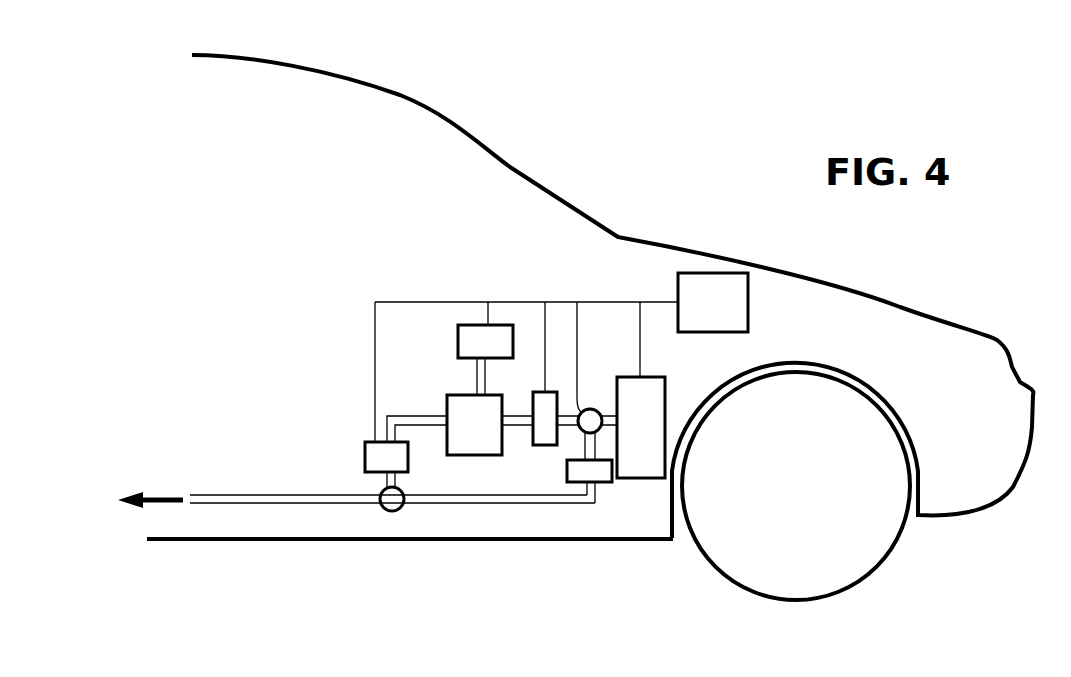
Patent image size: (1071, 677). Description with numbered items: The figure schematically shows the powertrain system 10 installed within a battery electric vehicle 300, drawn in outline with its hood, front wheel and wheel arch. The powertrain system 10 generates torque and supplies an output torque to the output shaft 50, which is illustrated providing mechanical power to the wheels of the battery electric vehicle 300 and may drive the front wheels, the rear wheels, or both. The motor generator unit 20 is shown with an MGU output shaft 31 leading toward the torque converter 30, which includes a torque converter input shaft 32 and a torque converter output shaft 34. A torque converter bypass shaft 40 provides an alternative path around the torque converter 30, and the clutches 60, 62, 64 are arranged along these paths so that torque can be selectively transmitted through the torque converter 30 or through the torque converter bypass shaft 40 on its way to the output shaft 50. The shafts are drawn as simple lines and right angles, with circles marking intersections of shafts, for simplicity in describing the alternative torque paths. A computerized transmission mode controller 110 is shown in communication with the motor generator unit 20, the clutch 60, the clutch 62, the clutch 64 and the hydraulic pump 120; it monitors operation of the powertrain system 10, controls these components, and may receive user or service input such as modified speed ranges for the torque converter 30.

The battery electric vehicle 300 is at (465, 132).
The computerized transmission mode controller 110 is at (708, 273).
The hydraulic pump 120 is at (475, 325).
The powertrain system 10 is at (547, 503).
The motor generator unit 20 is at (642, 478).
The torque converter 30 is at (473, 455).
The MGU output shaft 31 is at (608, 417).
The torque converter input shaft 32 is at (520, 417).
The torque converter output shaft 34 is at (422, 415).
The torque converter bypass shaft 40 is at (427, 503).
The output shaft 50 is at (212, 503).
The clutch 60 is at (542, 445).
The clutch 62 is at (607, 482).
The clutch 64 is at (367, 458).